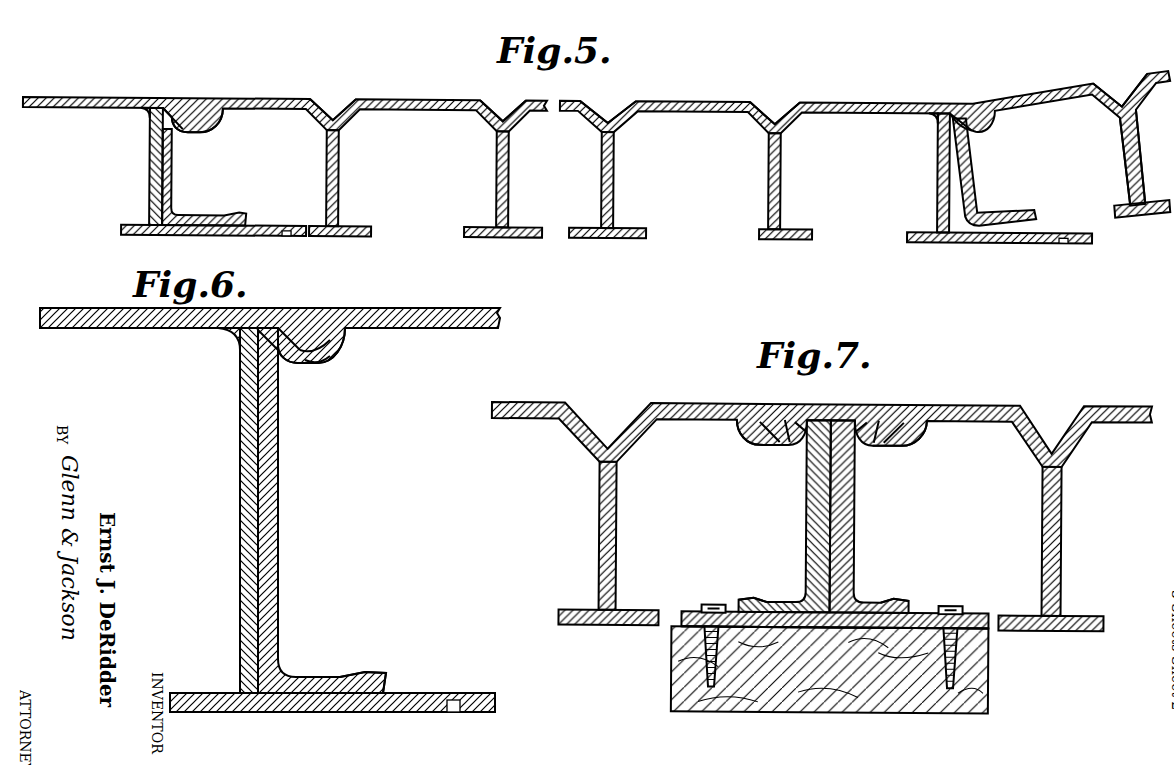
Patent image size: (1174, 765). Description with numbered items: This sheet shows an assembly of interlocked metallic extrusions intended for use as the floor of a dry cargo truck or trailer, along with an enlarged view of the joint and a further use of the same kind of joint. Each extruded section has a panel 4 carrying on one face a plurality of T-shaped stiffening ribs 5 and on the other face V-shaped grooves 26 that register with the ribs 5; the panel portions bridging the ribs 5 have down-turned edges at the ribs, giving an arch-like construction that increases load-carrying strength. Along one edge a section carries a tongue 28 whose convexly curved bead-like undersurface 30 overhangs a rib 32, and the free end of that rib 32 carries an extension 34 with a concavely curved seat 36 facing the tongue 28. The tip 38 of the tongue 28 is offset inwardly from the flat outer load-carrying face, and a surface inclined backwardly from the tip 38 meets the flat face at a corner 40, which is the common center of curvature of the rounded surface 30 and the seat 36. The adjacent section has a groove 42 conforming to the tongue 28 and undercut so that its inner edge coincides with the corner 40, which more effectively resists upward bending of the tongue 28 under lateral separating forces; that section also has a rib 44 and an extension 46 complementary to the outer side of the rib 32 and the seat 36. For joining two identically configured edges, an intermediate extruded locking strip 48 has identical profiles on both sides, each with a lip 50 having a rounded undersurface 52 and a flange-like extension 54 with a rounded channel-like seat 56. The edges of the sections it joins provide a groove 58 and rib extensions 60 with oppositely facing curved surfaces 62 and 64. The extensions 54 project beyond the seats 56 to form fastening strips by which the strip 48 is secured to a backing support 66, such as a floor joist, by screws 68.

In FIG. 5, the panel 4 is at (70, 97).
In FIG. 6, the panel 4 is at (78, 308).
In FIG. 5, the T-shaped stiffening ribs 5 is at (340, 171).
In FIG. 7, the T-shaped stiffening ribs 5 is at (831, 546).
In FIG. 5, the V-shaped grooves 26 is at (337, 106).
In FIG. 5, the tongue 28 is at (181, 97).
In FIG. 6, the tongue 28 is at (292, 328).
In FIG. 6, the bead-like undersurface 30 is at (318, 359).
In FIG. 5, the rib 32 is at (150, 166).
In FIG. 6, the rib 32 is at (240, 466).
In FIG. 5, the extension 34 is at (245, 226).
In FIG. 6, the extension 34 is at (348, 712).
In FIG. 6, the seat 36 is at (342, 688).
In FIG. 6, the tip 38 is at (350, 338).
In FIG. 5, the corner 40 is at (193, 100).
In FIG. 6, the corner 40 is at (310, 325).
In FIG. 6, the groove 42 is at (301, 326).
In FIG. 5, the rib 44 is at (172, 177).
In FIG. 6, the rib 44 is at (278, 523).
In FIG. 6, the extension 46 is at (372, 675).
In FIG. 7, the locking strip 48 is at (839, 395).
In FIG. 7, the lip 50 is at (787, 420).
In FIG. 7, the rounded undersurface 52 is at (790, 440).
In FIG. 7, the flange-like extension 54 is at (765, 625).
In FIG. 7, the seat 56 is at (781, 601).
In FIG. 7, the groove 58 is at (773, 417).
In FIG. 7, the rib extensions 60 is at (752, 598).
In FIG. 7, the curved surface 62 is at (818, 418).
In FIG. 7, the curved surface 64 is at (797, 625).
In FIG. 7, the backing support 66 is at (960, 710).
In FIG. 7, the screws 68 is at (705, 669).